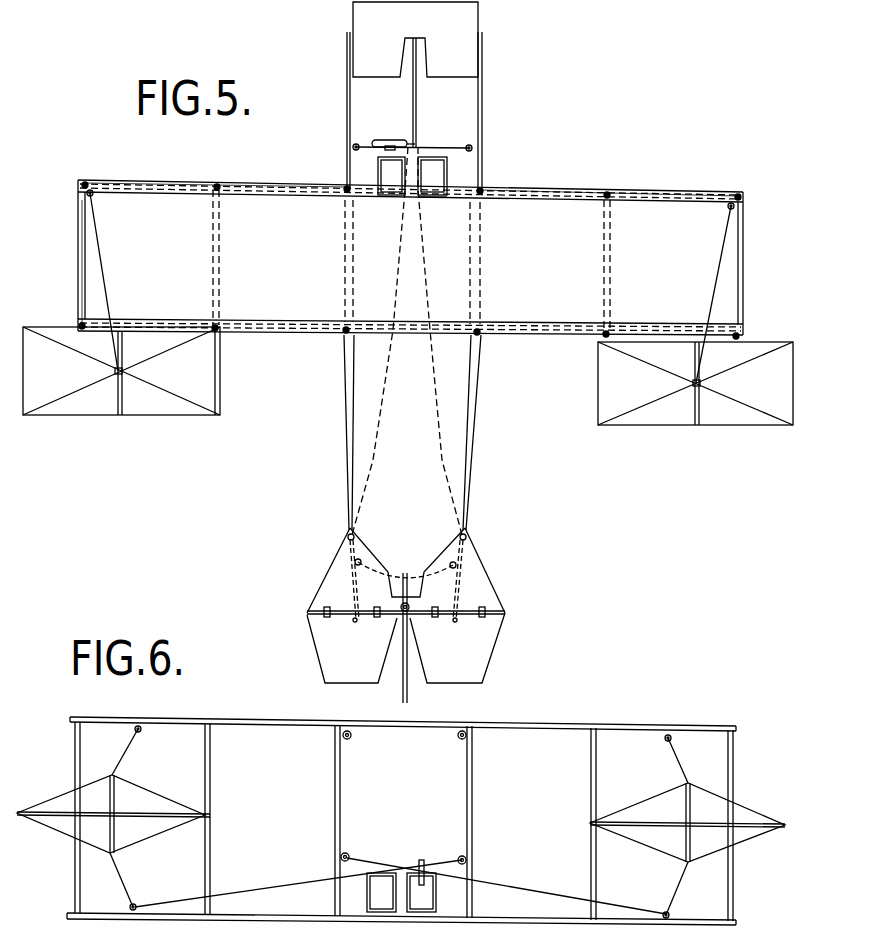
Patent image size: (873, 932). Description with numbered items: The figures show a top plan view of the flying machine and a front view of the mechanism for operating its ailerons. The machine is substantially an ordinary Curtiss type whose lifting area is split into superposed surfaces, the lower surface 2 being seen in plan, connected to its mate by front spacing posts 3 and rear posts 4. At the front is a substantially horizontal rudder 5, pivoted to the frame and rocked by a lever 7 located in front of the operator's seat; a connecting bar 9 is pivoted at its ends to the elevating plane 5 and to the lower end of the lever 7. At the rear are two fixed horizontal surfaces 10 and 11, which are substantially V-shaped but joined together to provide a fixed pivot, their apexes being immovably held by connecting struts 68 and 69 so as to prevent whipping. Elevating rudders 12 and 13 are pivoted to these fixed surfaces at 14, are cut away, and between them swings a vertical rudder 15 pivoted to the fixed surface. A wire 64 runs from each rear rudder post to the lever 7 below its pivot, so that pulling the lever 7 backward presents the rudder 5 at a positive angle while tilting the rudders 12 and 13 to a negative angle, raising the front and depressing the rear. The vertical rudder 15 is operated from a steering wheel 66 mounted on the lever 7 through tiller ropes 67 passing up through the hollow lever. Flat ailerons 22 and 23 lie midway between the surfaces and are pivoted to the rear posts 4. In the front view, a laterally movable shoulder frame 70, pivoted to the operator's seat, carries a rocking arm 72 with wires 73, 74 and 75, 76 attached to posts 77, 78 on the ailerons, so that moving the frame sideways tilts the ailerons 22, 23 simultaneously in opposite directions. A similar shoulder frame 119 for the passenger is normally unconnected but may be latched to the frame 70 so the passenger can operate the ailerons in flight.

In FIG. 5, the aeroplane surface 2 is at (410, 281).
In FIG. 5, the spacing post 3 is at (609, 196).
In FIG. 6, the spacing post 3 is at (80, 876).
In FIG. 5, the rear post 4 is at (84, 325).
In FIG. 6, the rear post 4 is at (596, 780).
In FIG. 5, the front horizontal rudder 5 is at (479, 12).
In FIG. 5, the lever 7 is at (418, 145).
In FIG. 5, the connecting bar 9 is at (417, 90).
In FIG. 5, the fixed horizontal surface 10 is at (322, 583).
In FIG. 5, the fixed horizontal surface 11 is at (492, 585).
In FIG. 5, the elevating rudder 12 is at (352, 649).
In FIG. 5, the elevating rudder 13 is at (457, 648).
In FIG. 5, the pivot 14 is at (327, 619).
In FIG. 5, the vertical rudder 15 is at (408, 697).
In FIG. 5, the aileron 22 is at (728, 418).
In FIG. 6, the aileron 22 is at (163, 818).
In FIG. 5, the aileron 23 is at (155, 408).
In FIG. 6, the aileron 23 is at (641, 830).
In FIG. 5, the wire 64 is at (432, 418).
In FIG. 5, the steering wheel 66 is at (390, 140).
In FIG. 5, the tiller rope 67 is at (345, 352).
In FIG. 5, the connecting strut 68 is at (347, 535).
In FIG. 5, the connecting strut 69 is at (468, 536).
In FIG. 5, the shoulder frame 70 is at (398, 197).
In FIG. 6, the shoulder frame 70 is at (418, 882).
In FIG. 5, the rocking arm 72 is at (388, 197).
In FIG. 6, the rocking arm 72 is at (422, 867).
In FIG. 5, the wire 73 is at (270, 195).
In FIG. 6, the wire 73 is at (276, 893).
In FIG. 6, the wire 74 is at (292, 726).
In FIG. 6, the wire 75 is at (543, 731).
In FIG. 5, the wire 76 is at (572, 201).
In FIG. 6, the wire 76 is at (547, 912).
In FIG. 5, the post 77 is at (701, 382).
In FIG. 6, the post 77 is at (113, 790).
In FIG. 5, the post 78 is at (125, 371).
In FIG. 6, the post 78 is at (690, 806).
In FIG. 5, the shoulder frame 119 is at (440, 198).
In FIG. 6, the shoulder frame 119 is at (378, 872).